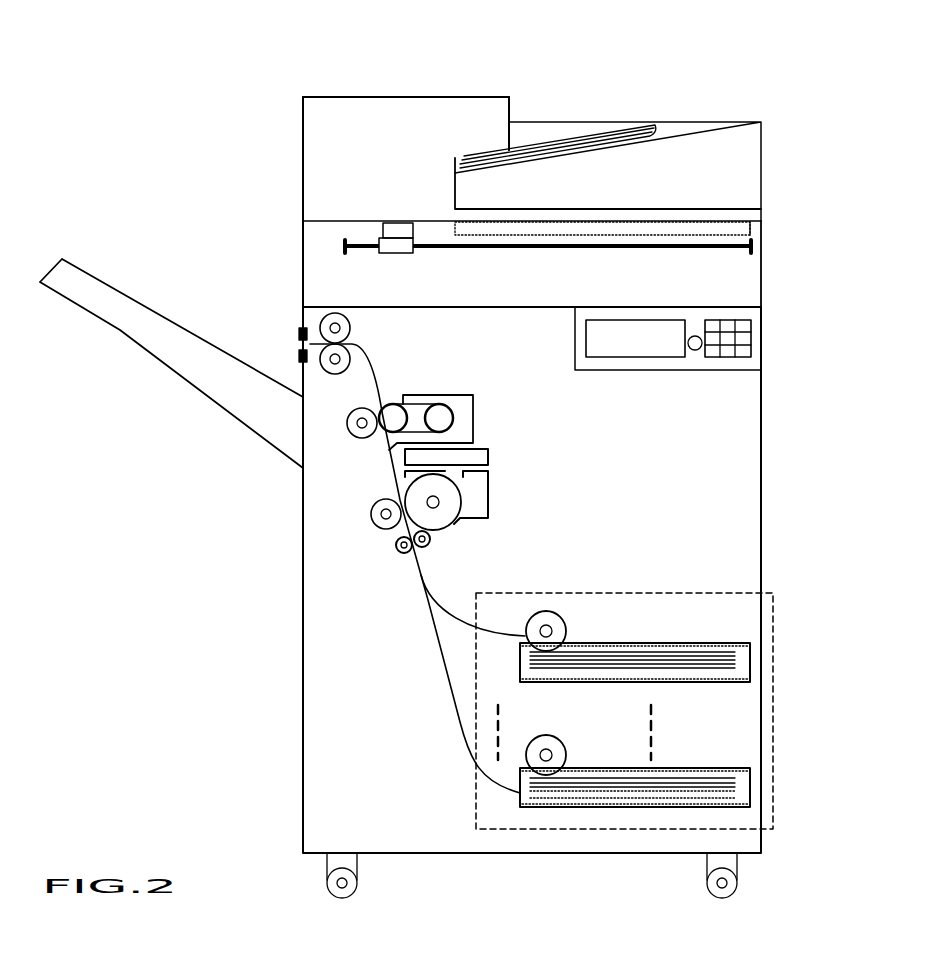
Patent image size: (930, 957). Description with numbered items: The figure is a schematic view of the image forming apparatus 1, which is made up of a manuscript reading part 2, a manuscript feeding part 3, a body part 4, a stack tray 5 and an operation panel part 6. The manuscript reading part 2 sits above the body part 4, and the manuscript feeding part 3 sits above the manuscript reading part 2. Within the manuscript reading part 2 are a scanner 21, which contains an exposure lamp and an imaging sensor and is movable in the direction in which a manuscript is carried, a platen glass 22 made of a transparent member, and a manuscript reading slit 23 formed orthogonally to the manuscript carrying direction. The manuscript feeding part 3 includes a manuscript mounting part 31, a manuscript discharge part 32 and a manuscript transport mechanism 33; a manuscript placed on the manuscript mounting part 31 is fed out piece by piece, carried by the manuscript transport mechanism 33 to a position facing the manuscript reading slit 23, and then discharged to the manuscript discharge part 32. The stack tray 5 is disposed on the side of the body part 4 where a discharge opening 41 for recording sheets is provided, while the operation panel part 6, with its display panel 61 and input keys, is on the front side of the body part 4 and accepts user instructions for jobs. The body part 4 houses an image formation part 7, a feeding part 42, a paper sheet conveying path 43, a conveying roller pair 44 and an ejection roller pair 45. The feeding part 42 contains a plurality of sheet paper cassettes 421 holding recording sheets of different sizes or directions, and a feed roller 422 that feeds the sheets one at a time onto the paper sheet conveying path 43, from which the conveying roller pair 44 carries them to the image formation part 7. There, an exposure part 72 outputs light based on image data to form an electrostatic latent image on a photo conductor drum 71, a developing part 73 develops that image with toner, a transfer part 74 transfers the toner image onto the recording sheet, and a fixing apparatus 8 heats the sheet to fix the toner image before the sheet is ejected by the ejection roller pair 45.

The image forming apparatus 1 is at (233, 131).
The manuscript reading part 2 is at (302, 254).
The manuscript feeding part 3 is at (302, 158).
The body part 4 is at (762, 553).
The stack tray 5 is at (196, 386).
The operation panel part 6 is at (752, 325).
The image formation part 7 is at (459, 503).
The fixing apparatus 8 is at (473, 398).
The scanner 21 is at (405, 253).
The platen glass 22 is at (762, 234).
The manuscript reading slit 23 is at (409, 226).
The manuscript mounting part 31 is at (663, 128).
The manuscript discharge part 32 is at (633, 207).
The manuscript transport mechanism 33 is at (407, 102).
The discharge opening 41 is at (299, 346).
The feeding part 42 is at (653, 711).
The paper sheet conveying path 43 is at (408, 560).
The conveying roller pair 44 is at (397, 547).
The ejection roller pair 45 is at (352, 328).
The display panel 61 is at (660, 347).
The photo conductor drum 71 is at (450, 530).
The exposure part 72 is at (488, 452).
The developing part 73 is at (488, 486).
The transfer part 74 is at (371, 513).
The sheet paper cassettes 421 is at (690, 643).
The feed roller 422 is at (567, 633).